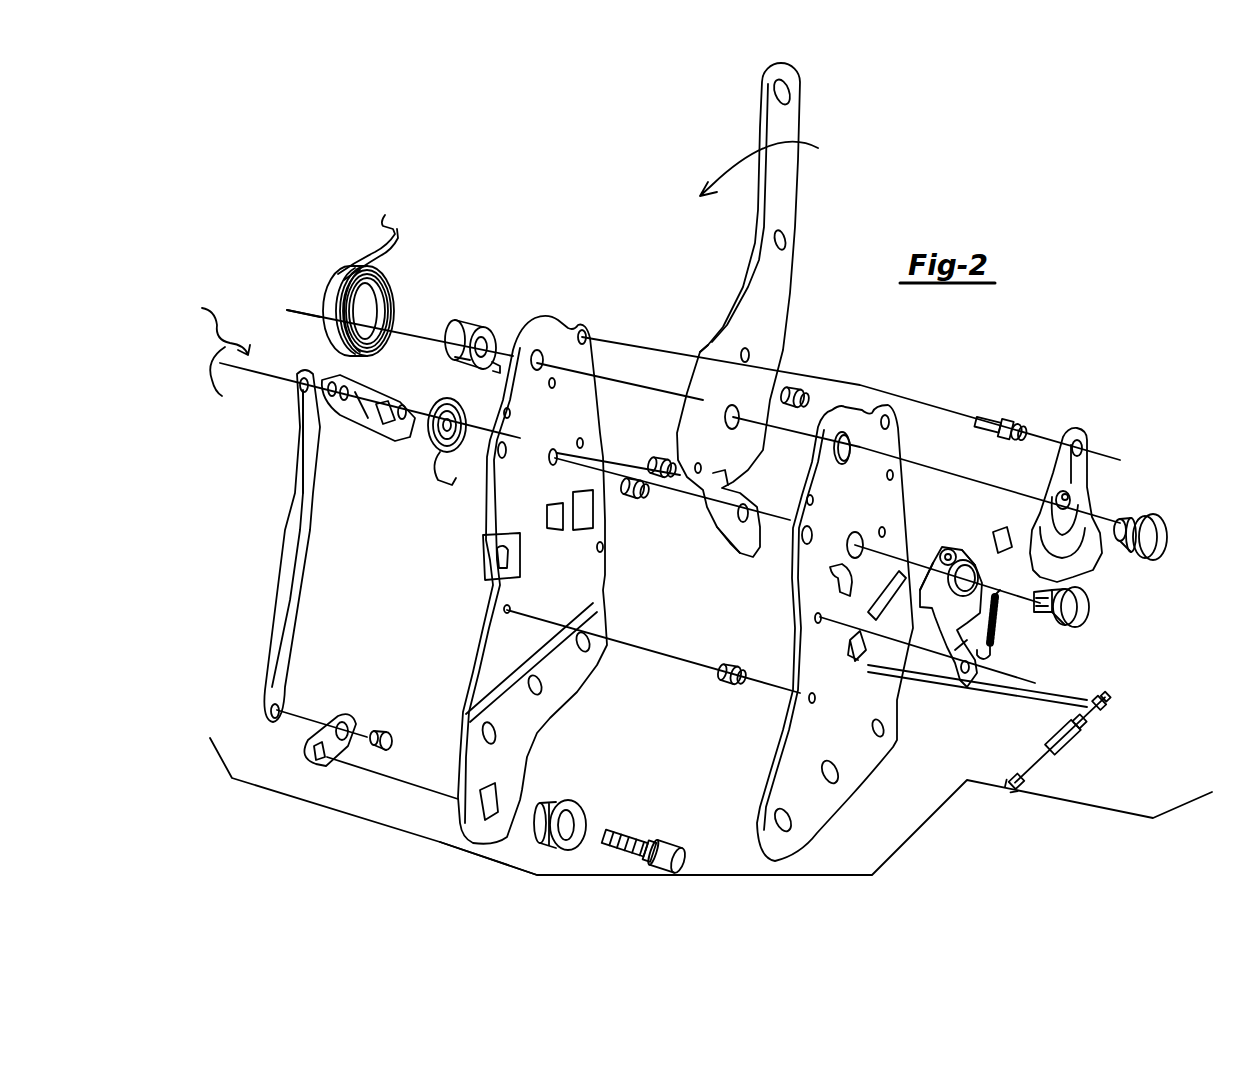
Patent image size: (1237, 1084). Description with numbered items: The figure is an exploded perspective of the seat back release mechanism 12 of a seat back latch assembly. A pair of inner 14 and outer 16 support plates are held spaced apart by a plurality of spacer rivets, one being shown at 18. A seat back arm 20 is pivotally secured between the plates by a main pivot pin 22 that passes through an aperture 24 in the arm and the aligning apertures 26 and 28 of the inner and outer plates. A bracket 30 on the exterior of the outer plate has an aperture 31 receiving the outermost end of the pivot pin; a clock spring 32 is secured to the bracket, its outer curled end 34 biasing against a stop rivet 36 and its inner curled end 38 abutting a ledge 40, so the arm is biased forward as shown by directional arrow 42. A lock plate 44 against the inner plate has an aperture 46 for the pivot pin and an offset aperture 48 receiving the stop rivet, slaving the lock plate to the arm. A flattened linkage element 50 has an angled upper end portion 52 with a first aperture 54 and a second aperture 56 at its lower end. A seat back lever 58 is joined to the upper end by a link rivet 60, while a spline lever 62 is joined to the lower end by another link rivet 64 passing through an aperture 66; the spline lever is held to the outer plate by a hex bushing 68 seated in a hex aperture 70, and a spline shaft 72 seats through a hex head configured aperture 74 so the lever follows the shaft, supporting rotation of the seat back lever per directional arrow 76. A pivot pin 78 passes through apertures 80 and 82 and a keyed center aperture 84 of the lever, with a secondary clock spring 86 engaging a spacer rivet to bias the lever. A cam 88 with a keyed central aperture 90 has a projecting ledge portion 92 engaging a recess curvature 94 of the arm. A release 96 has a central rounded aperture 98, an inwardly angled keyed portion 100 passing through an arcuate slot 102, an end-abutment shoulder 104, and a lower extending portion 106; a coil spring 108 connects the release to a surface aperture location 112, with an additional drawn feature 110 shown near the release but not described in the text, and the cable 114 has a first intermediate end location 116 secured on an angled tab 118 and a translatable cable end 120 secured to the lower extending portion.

The seat back release mechanism 12 is at (711, 838).
The inner support plate 14 is at (807, 723).
The outer support plate 16 is at (510, 633).
The spacer rivet 18 is at (795, 387).
The seat back arm 20 is at (755, 317).
The main pivot pin 22 is at (1137, 510).
The aperture 24 is at (740, 428).
The aperture 26 is at (852, 447).
The aperture 28 is at (548, 318).
The bracket 30 is at (457, 313).
The aperture 31 is at (480, 343).
The clock spring 32 is at (337, 273).
The outer curled end 34 is at (385, 225).
The stop rivet 36 is at (988, 418).
The inner curled end 38 is at (282, 327).
The ledge 40 is at (458, 362).
The directional arrow 42 is at (732, 157).
The lock plate 44 is at (1048, 470).
The aperture 46 is at (1087, 487).
The offset aperture 48 is at (1084, 437).
The linkage element 50 is at (290, 543).
The angled upper end portion 52 is at (300, 410).
The first aperture 54 is at (296, 384).
The second aperture 56 is at (264, 717).
The seat back lever 58 is at (372, 432).
The link rivet 60 is at (398, 440).
The spline lever 62 is at (338, 385).
The link rivet 64 is at (383, 730).
The aperture 66 is at (342, 722).
The hex bushing 68 is at (557, 797).
The hex aperture 70 is at (484, 866).
The spline shaft 72 is at (645, 835).
The reduced area hex head configured aperture 74 is at (340, 752).
The directional arrow 76 is at (208, 337).
The pivot pin 78 is at (1053, 617).
The aperture 80 is at (853, 532).
The aperture 82 is at (553, 448).
The keyed center aperture 84 is at (443, 410).
The secondary clock spring 86 is at (458, 410).
The cam 88 is at (733, 543).
The keyed central aperture 90 is at (750, 560).
The projecting ledge portion 92 is at (727, 512).
The recess curvature 94 is at (698, 417).
The release 96 is at (940, 548).
The central rounded aperture 98 is at (957, 548).
The inwardly angled keyed portion 100 is at (930, 680).
The arcuate slot 102 is at (838, 595).
The end-abutment shoulder 104 is at (1012, 522).
The lower extending portion 106 is at (975, 692).
The coil spring 108 is at (1003, 650).
The ring 110 is at (978, 565).
The surface aperture location 112 is at (850, 645).
The cable 114 is at (1030, 792).
The first intermediate end location 116 is at (1078, 735).
The angled tab 118 is at (816, 699).
The linearly translatable cable end 120 is at (1110, 700).